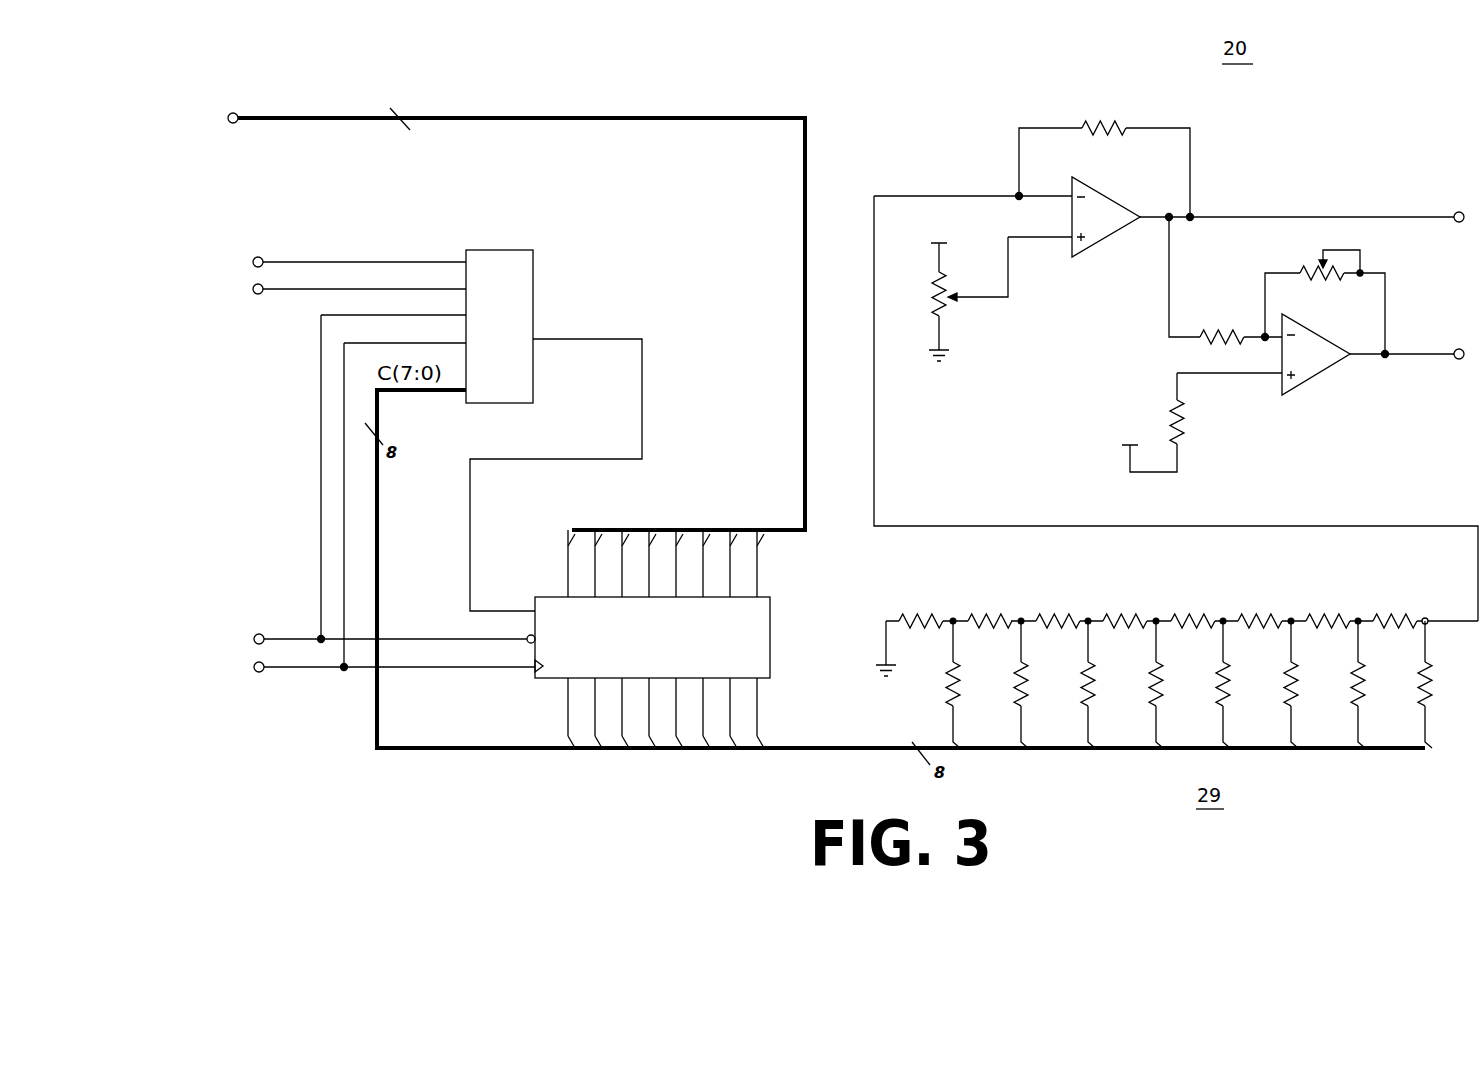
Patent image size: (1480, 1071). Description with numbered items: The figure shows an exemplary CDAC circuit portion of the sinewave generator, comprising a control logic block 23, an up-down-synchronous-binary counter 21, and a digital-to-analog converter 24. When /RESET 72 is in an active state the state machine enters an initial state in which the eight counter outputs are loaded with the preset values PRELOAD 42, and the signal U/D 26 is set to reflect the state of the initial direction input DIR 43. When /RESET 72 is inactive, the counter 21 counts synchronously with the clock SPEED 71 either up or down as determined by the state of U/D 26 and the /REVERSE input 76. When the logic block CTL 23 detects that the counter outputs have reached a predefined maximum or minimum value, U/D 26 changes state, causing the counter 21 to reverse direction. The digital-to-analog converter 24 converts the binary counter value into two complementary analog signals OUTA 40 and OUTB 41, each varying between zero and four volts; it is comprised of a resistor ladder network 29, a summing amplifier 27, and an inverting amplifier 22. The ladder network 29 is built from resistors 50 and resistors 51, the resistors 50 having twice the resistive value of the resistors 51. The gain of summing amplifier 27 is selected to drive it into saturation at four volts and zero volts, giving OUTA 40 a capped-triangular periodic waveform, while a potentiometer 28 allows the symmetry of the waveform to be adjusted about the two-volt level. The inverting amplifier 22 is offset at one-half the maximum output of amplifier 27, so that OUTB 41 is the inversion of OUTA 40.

The up-down-synchronous-binary counter 21 is at (767, 622).
The inverting amplifier 22 is at (1320, 350).
The control logic block 23 is at (512, 285).
The digital-to-analog converter 24 is at (935, 291).
The U/D signal 26 is at (625, 338).
The summing amplifier 27 is at (1108, 208).
The gain adjustment potentiometer 28 is at (1308, 270).
The R-2R ladder resistor network 29 is at (1171, 654).
The OUTA 40 is at (1453, 207).
The OUTB 41 is at (1467, 346).
The PRELOAD(7:0) 42 is at (353, 104).
The DIR input 43 is at (270, 296).
The resistors 50 is at (1168, 658).
The resistors 51 is at (1172, 594).
The SPEED clock 71 is at (236, 683).
The /RESET signal 72 is at (229, 626).
The reverse input 76 is at (377, 255).